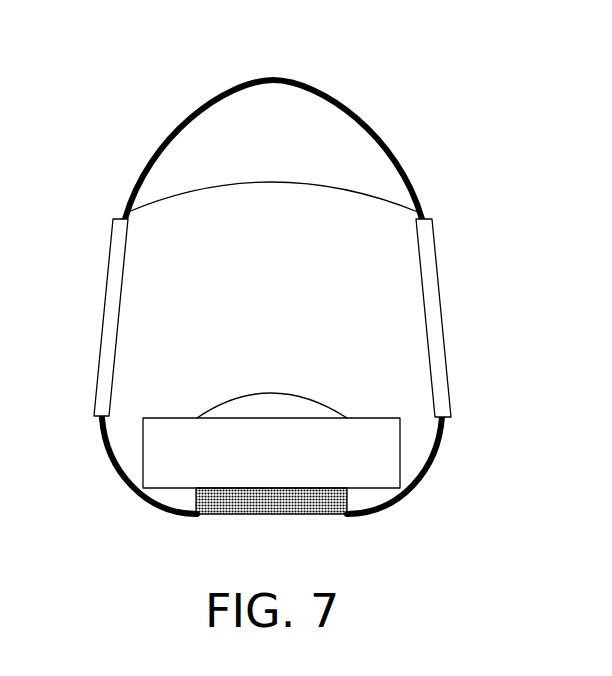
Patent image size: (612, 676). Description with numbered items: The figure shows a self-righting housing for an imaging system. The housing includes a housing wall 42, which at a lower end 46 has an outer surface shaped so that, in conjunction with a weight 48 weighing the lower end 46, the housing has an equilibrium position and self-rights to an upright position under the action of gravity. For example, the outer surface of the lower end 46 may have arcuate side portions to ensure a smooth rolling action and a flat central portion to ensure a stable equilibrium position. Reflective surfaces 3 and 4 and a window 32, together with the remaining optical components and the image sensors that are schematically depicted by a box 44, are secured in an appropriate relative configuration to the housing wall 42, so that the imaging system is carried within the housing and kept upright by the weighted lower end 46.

The reflective surface 3 is at (270, 393).
The reflective surface 4 is at (270, 182).
The window 32 is at (436, 255).
The housing wall 42 is at (269, 78).
The box 44 is at (400, 470).
The lower end 46 is at (103, 504).
The weight 48 is at (270, 516).